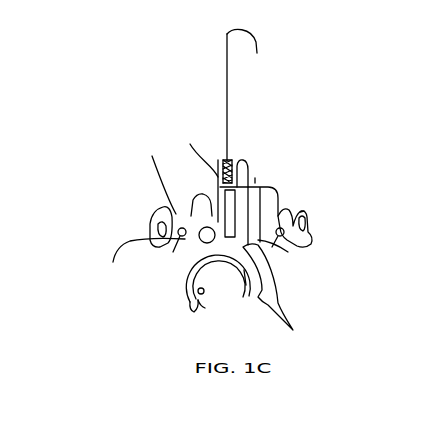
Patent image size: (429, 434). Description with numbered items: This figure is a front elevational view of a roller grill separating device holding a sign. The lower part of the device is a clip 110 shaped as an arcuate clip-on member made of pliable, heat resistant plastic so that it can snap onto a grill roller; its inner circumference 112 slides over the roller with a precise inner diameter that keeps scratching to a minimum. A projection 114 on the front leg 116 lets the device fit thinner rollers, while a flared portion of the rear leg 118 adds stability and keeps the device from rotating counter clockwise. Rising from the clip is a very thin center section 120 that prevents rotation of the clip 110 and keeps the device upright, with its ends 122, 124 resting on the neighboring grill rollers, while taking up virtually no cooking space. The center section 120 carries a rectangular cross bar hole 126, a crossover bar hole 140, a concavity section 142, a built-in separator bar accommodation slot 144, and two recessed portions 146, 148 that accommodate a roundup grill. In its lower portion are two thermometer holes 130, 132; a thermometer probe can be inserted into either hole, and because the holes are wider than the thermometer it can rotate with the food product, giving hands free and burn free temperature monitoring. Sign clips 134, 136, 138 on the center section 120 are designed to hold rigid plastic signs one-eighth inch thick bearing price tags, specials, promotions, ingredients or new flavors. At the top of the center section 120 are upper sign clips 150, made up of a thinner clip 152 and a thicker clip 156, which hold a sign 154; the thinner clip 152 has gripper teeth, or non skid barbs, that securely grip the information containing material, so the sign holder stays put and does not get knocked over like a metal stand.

The clip 110 is at (288, 297).
The inner circumference 112 is at (210, 270).
The projection 114 is at (206, 308).
The front leg 116 is at (193, 306).
The rear leg 118 is at (285, 315).
The center section 120 is at (305, 198).
The end 122 is at (113, 262).
The end 124 is at (312, 240).
The rectangular cross bar hole 126 is at (246, 272).
The thermometer hole 130 is at (183, 248).
The thermometer hole 132 is at (289, 253).
The sign clip 134 is at (199, 230).
The sign clip 136 is at (212, 187).
The sign clip 138 is at (305, 214).
The crossover bar hole 140 is at (155, 177).
The concavity section 142 is at (198, 200).
The built-in separator bar accommodation slot 144 is at (263, 178).
The recessed portion 146 is at (186, 246).
The recessed portion 148 is at (276, 248).
The upper sign clips 150 is at (245, 149).
The thinner clip 152 is at (218, 176).
The sign 154 is at (247, 51).
The thicker clip 156 is at (255, 178).